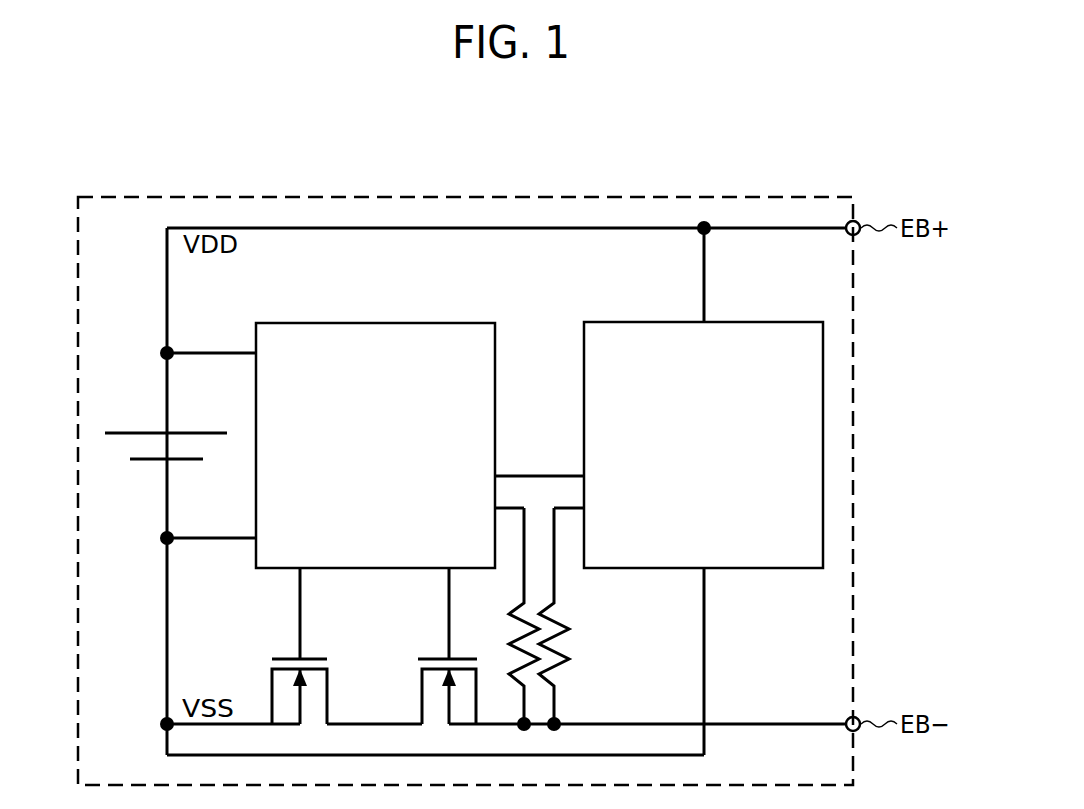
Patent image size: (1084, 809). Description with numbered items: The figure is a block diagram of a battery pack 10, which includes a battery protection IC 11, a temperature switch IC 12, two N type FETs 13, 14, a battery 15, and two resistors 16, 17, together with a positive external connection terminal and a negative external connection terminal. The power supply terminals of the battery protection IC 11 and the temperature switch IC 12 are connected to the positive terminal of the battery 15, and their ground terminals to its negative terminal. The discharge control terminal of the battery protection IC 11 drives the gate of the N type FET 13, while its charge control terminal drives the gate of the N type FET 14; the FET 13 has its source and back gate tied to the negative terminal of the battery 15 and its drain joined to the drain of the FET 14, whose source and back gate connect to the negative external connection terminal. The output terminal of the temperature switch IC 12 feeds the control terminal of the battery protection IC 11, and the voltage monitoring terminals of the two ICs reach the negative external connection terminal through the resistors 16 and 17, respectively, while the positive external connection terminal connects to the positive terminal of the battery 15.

The battery pack 10 is at (263, 197).
The battery protection IC 11 is at (262, 323).
The temperature switch IC 12 is at (591, 322).
The N type FET 13 is at (263, 660).
The N type FET 14 is at (412, 660).
The battery 15 is at (132, 432).
The resistor 16 is at (513, 616).
The resistor 17 is at (565, 621).